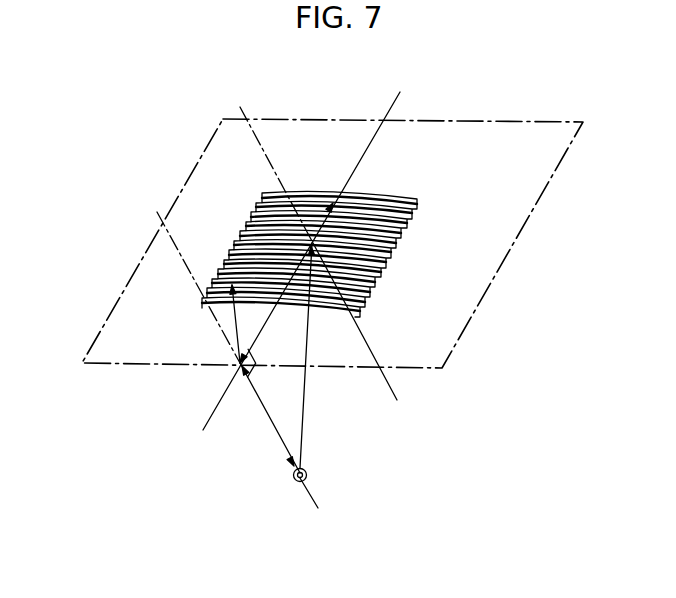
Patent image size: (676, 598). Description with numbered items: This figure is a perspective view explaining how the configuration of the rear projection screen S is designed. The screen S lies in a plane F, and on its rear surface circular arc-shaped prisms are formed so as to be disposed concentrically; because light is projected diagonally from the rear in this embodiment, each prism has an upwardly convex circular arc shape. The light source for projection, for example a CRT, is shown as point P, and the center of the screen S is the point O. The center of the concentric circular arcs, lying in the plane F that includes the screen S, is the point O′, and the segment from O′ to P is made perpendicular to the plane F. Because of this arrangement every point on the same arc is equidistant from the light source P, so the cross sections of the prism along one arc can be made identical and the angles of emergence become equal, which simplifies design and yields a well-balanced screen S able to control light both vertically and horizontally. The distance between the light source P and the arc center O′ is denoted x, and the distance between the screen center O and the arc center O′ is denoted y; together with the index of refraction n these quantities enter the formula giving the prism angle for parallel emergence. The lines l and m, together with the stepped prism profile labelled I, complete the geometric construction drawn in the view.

The plane including the screen F is at (517, 122).
The rear projection screen S is at (405, 195).
The step riser I is at (413, 212).
The index of refraction n is at (303, 249).
The line l is at (323, 265).
The line m is at (315, 504).
The distance between light source and center of arcs x is at (228, 342).
The distance between screen center and center of arcs y is at (252, 334).
The center of the screen O is at (302, 347).
The center of the circular arcs O′ is at (242, 378).
The radius R is at (229, 324).
The light source for projection P is at (310, 476).